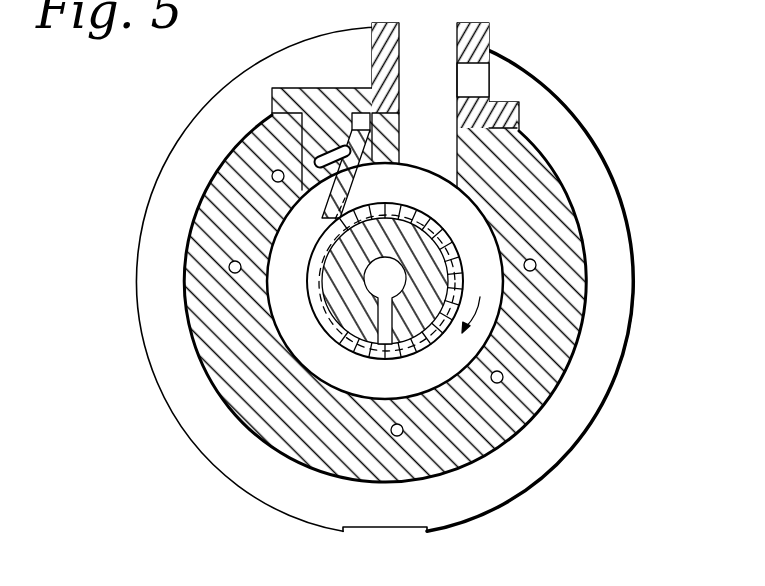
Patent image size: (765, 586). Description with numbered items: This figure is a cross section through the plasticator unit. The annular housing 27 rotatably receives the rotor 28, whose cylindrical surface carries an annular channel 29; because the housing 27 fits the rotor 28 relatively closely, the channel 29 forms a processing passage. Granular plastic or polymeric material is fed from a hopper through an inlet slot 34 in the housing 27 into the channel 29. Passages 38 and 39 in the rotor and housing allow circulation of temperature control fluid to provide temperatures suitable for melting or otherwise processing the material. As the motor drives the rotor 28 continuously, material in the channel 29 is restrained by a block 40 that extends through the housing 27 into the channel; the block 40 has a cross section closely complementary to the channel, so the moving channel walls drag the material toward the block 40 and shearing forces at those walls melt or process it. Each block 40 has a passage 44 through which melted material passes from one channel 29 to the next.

The annular housing 27 is at (586, 283).
The rotor 28 is at (493, 338).
The annular channel 29 is at (492, 250).
The inlet slot 34 is at (433, 35).
The passage 38 is at (395, 275).
The passage 39 is at (271, 176).
The block 40 is at (362, 182).
The passage 44 is at (321, 188).